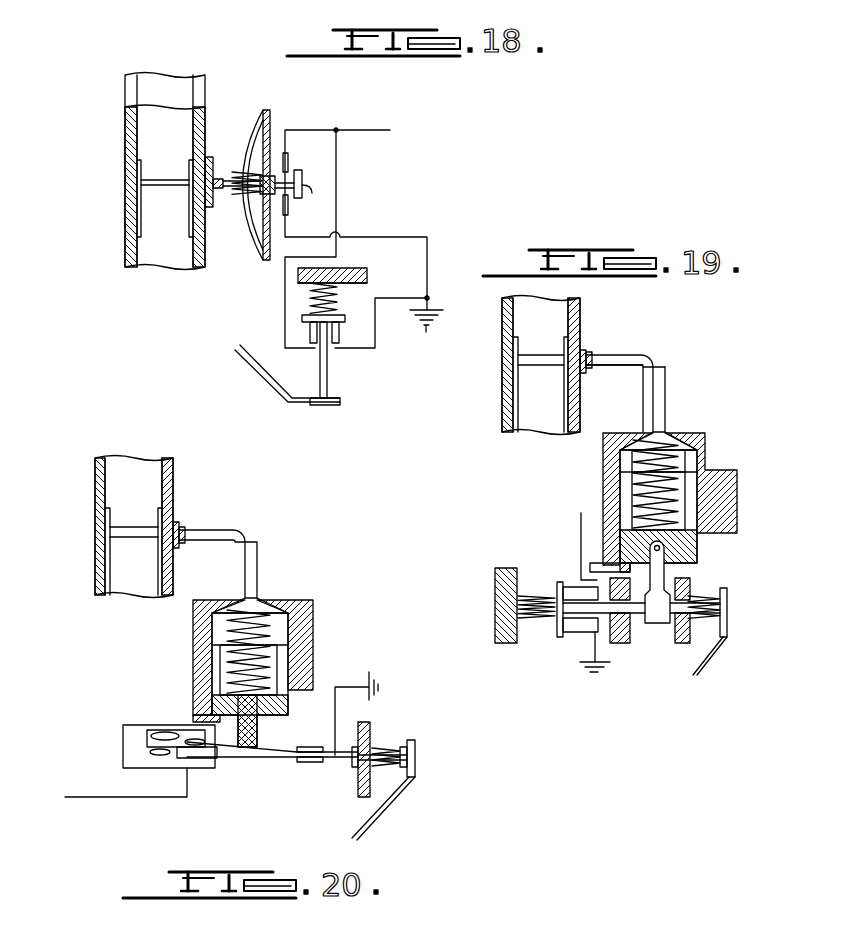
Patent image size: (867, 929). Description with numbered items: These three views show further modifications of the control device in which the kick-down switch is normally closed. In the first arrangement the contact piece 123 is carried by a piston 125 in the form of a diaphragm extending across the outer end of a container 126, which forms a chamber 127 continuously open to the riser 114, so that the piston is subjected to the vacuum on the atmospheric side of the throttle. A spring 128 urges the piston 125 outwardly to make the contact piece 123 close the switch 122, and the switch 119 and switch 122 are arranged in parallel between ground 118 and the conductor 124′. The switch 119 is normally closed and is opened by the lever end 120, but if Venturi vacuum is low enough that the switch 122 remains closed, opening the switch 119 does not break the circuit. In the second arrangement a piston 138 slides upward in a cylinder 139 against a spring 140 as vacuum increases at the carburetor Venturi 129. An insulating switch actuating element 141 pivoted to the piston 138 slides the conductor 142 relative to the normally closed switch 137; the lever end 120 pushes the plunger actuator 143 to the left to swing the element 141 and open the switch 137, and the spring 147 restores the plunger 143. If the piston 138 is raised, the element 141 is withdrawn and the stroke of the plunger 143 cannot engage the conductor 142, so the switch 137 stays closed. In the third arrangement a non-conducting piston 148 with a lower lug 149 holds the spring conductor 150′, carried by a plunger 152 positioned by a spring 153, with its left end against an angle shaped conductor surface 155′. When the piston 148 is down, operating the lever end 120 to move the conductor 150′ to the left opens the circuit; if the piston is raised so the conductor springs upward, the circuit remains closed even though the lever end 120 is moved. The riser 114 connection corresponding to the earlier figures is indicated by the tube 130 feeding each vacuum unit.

In FIG. 18, the riser 114 is at (125, 90).
In FIG. 19, the riser 114 is at (583, 305).
In FIG. 20, the riser 114 is at (103, 468).
In FIG. 18, the carburetor Venturi 129 is at (137, 178).
In FIG. 19, the carburetor Venturi 129 is at (513, 358).
In FIG. 20, the carburetor Venturi 129 is at (108, 523).
In FIG. 18, the pressure tube / rod 130 is at (225, 177).
In FIG. 19, the pressure tube / rod 130 is at (590, 360).
In FIG. 20, the pressure tube / rod 130 is at (204, 531).
In FIG. 18, the spring 128 is at (244, 170).
In FIG. 18, the container 126 is at (259, 224).
In FIG. 18, the chamber 127 is at (264, 250).
In FIG. 18, the piston 125 is at (272, 136).
In FIG. 18, the switch 122 is at (288, 163).
In FIG. 18, the contact piece 123 is at (312, 188).
In FIG. 18, the conductor 124′ is at (380, 130).
In FIG. 19, the conductor 124′ is at (581, 520).
In FIG. 20, the conductor 124′ is at (65, 797).
In FIG. 18, the switch 119 is at (340, 327).
In FIG. 18, the ground 118 is at (425, 333).
In FIG. 19, the ground 118 is at (597, 674).
In FIG. 20, the ground 118 is at (375, 681).
In FIG. 18, the lever end 120 is at (305, 408).
In FIG. 19, the lever end 120 is at (733, 630).
In FIG. 20, the lever end 120 is at (415, 773).
In FIG. 19, the spring 140 is at (690, 450).
In FIG. 20, the spring 140 is at (288, 615).
In FIG. 19, the cylinder 139 is at (697, 457).
In FIG. 19, the piston 138 is at (697, 495).
In FIG. 19, the switch actuating element 141 is at (657, 623).
In FIG. 19, the conductor 142 is at (560, 583).
In FIG. 19, the switch 137 is at (580, 632).
In FIG. 19, the plunger actuator 143 is at (692, 598).
In FIG. 19, the spring 147 is at (706, 597).
In FIG. 20, the piston 148 is at (290, 660).
In FIG. 20, the lower lug 149 is at (257, 730).
In FIG. 20, the angle shaped conductor surface 155′ is at (168, 725).
In FIG. 20, the spring conductor 150′ is at (232, 757).
In FIG. 20, the plunger 152 is at (385, 770).
In FIG. 20, the spring 153 is at (380, 745).